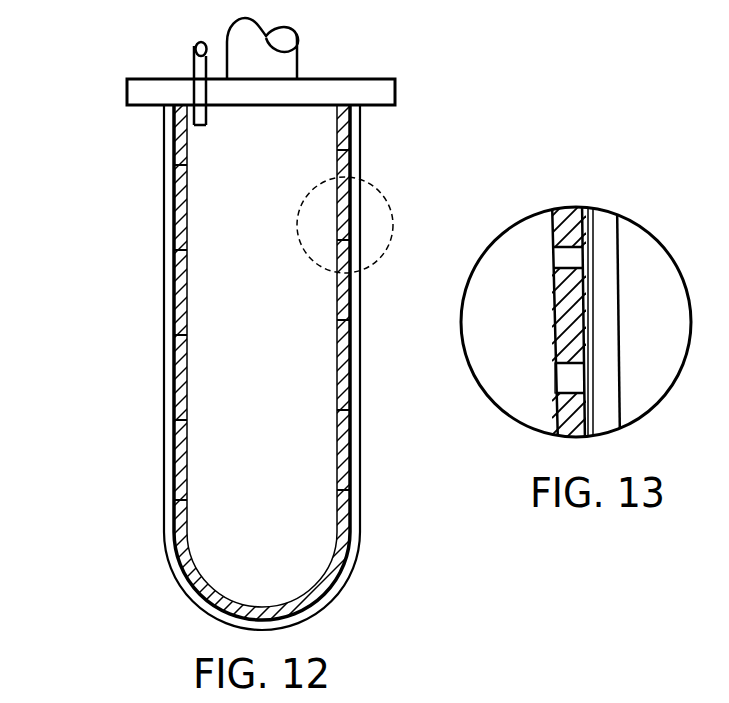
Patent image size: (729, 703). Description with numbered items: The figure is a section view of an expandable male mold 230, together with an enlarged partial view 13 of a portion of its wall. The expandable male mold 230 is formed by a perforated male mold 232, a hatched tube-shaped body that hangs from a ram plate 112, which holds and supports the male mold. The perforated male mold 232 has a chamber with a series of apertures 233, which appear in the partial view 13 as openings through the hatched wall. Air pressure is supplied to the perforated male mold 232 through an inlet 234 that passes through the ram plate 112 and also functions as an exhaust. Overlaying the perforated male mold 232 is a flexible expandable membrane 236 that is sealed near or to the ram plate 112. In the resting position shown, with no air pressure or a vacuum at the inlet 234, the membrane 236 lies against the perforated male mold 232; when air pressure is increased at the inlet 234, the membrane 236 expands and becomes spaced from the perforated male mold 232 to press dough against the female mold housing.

In FIG. 12, the partial view 13 is at (380, 193).
In FIG. 12, the ram plate 112 is at (397, 81).
In FIG. 12, the expandable male mold 230 is at (364, 370).
In FIG. 12, the perforated male mold 232 is at (190, 342).
In FIG. 13, the perforated male mold 232 is at (555, 313).
In FIG. 13, the apertures 233 is at (557, 378).
In FIG. 12, the inlet 234 is at (194, 40).
In FIG. 12, the expandable membrane 236 is at (165, 368).
In FIG. 13, the expandable membrane 236 is at (593, 218).